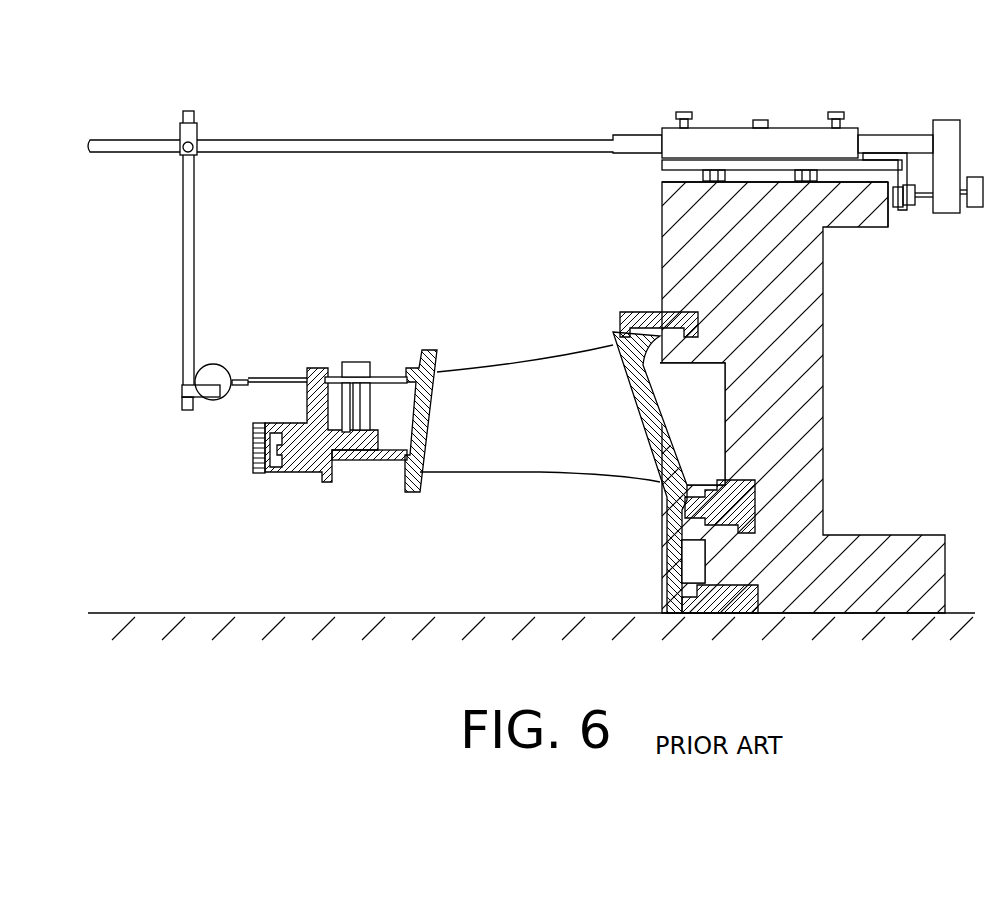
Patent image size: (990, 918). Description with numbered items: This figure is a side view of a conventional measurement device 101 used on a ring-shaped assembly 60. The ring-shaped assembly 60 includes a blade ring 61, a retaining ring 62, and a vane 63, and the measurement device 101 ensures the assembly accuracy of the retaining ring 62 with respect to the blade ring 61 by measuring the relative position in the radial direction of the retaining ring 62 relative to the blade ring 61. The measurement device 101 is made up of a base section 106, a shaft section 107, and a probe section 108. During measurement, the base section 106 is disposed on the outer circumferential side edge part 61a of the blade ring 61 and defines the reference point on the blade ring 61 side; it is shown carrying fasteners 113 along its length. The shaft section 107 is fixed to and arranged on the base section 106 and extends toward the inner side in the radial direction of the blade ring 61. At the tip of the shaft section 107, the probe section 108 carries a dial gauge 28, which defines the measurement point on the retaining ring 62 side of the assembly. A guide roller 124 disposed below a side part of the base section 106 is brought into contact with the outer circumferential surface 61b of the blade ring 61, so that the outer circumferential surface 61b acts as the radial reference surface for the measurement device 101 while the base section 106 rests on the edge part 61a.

The measurement device 101 is at (362, 258).
The shaft section 107 is at (415, 138).
The probe section 108 is at (175, 306).
The dial gauge 28 is at (207, 410).
The retaining ring 62 is at (300, 476).
The ring-shaped assembly 60 is at (505, 462).
The vane 63 is at (547, 452).
The blade ring 61 is at (802, 331).
The outer circumferential side edge part 61a is at (752, 178).
The outer circumferential surface 61b is at (890, 212).
The fastening nuts 113 is at (714, 172).
The base section 106 is at (846, 158).
The guide roller 124 is at (905, 210).